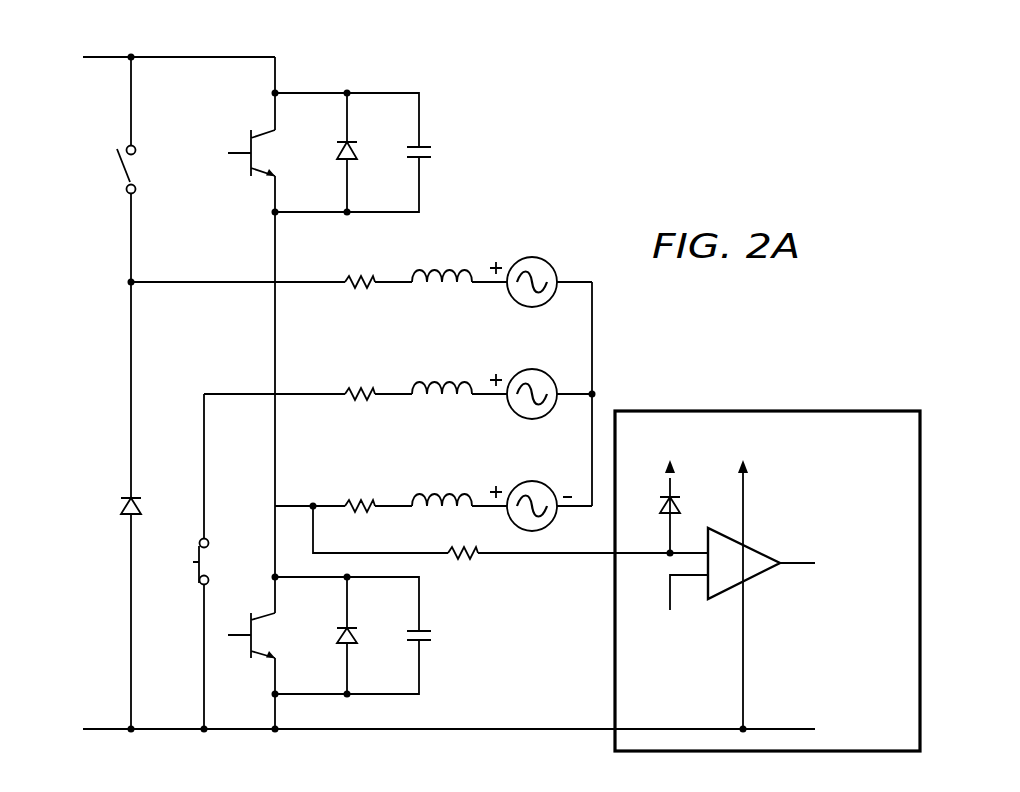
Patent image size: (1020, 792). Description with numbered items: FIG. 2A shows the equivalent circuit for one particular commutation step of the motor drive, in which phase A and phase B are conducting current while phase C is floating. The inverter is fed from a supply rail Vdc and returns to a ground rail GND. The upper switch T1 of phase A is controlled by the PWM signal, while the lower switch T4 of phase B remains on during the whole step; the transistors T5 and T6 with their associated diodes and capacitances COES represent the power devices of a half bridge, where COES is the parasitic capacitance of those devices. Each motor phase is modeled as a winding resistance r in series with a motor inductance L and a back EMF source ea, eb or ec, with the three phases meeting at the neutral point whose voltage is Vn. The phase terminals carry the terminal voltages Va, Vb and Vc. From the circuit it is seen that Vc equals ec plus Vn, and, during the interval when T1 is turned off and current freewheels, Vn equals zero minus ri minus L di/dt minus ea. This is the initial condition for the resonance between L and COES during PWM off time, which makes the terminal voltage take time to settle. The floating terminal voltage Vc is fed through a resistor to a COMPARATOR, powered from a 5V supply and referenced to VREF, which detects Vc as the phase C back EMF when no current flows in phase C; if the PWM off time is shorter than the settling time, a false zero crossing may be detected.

The DC supply voltage rail Vdc is at (157, 62).
The ground rail GND is at (424, 730).
The upper switch of phase A T1 is at (112, 169).
The lower switch of phase B T4 is at (185, 634).
The transistor T5 is at (265, 153).
The transistor T6 is at (265, 635).
The parasitic capacitance of power devices COES is at (384, 394).
The phase a voltage node Va is at (238, 265).
The phase b voltage node Vb is at (274, 449).
The terminal voltage of floating phase C Vc is at (361, 510).
The phase resistance r is at (378, 379).
The motor inductance L is at (459, 375).
The phase A back EMF ea is at (541, 266).
The phase b back EMF source eb is at (541, 378).
The phase back EMF ec is at (541, 490).
The neutral voltage Vn is at (606, 394).
The comparator circuit COMPARATOR is at (684, 581).
The 5V supply 5V is at (707, 579).
The reference voltage input VREF is at (675, 612).